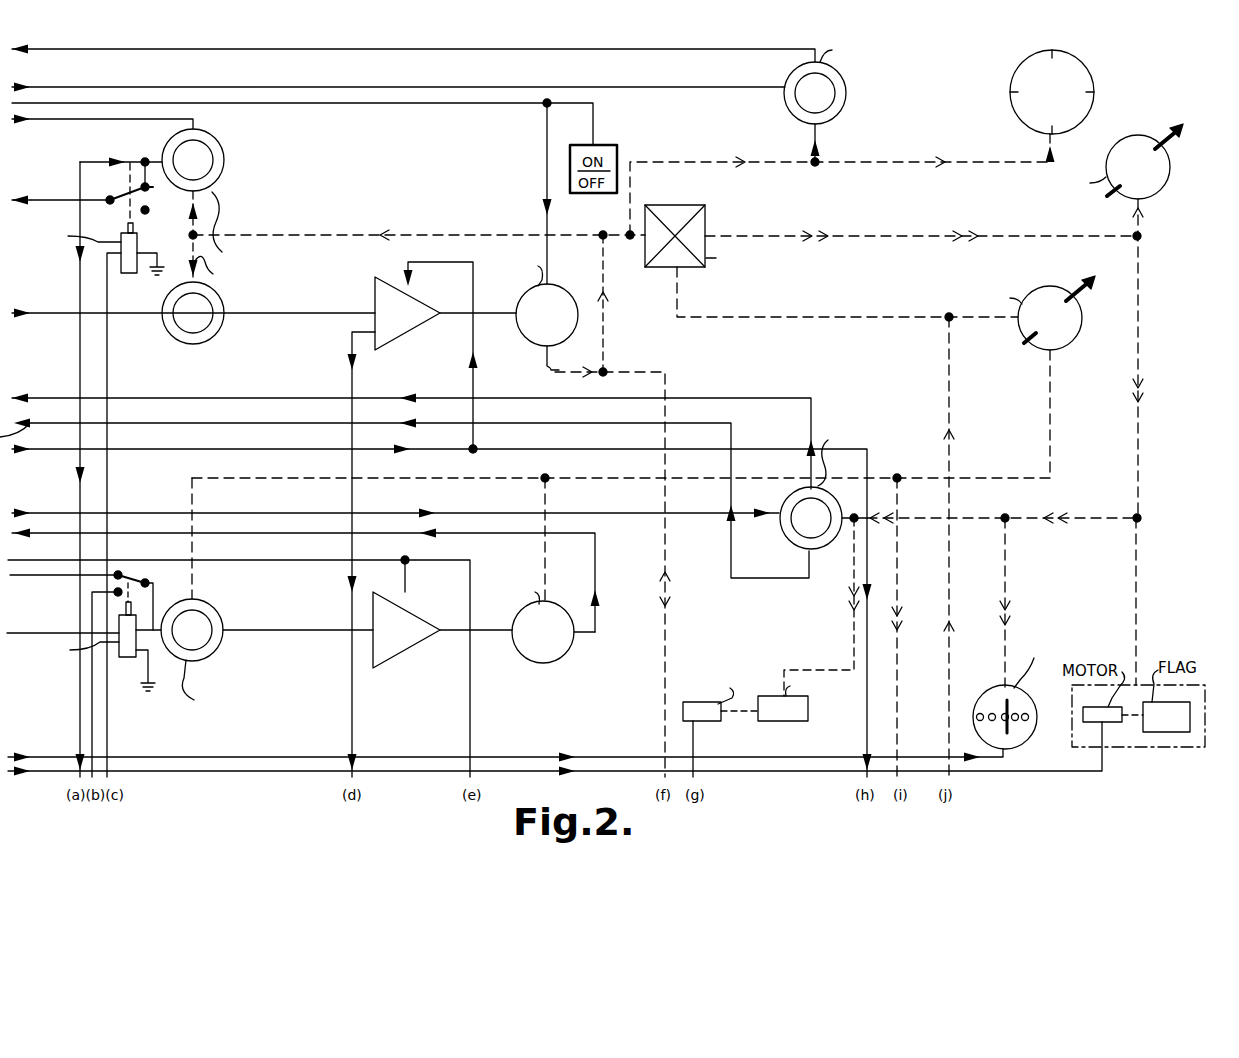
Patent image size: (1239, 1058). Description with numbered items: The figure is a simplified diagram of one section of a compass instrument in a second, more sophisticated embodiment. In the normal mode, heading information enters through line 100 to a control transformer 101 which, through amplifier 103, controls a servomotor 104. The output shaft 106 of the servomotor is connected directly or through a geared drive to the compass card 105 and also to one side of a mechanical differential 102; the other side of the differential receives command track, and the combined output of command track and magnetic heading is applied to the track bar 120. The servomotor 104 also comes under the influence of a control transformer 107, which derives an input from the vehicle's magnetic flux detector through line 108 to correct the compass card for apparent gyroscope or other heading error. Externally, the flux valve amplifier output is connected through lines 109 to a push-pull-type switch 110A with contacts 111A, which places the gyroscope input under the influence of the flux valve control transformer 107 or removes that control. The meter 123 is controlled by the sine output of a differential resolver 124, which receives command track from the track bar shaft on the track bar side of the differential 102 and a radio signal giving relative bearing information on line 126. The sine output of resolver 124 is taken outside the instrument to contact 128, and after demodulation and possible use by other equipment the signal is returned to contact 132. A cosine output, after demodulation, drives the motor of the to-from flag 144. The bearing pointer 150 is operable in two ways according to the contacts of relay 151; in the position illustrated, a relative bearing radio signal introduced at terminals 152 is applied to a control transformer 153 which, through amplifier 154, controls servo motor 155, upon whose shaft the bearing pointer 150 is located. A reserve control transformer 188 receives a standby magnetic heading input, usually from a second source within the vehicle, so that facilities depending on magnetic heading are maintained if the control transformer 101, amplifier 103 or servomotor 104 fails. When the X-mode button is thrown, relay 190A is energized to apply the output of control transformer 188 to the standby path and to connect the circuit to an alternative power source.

The line 100 is at (42, 312).
The control transformer 101 is at (212, 306).
The mechanical differential 102 is at (703, 208).
The amplifier 103 is at (380, 296).
The servomotor 104 is at (526, 296).
The compass card 105 is at (1016, 116).
The output shaft 106 is at (854, 161).
The control transformer 107 is at (837, 96).
The line 108 is at (98, 88).
The lines 109 is at (53, 198).
The push-pull-type switch 110A is at (129, 166).
The contacts 111A is at (146, 212).
The track bar 120 is at (1126, 136).
The meter 123 is at (992, 694).
The differential resolver 124 is at (790, 535).
The line 126 is at (142, 511).
The contact 128 is at (790, 578).
The contact 132 is at (42, 756).
The to-from flag 144 is at (796, 721).
The bearing pointer 150 is at (1074, 342).
The relay 151 is at (125, 657).
The terminals 152 is at (16, 576).
The control transformer 153 is at (209, 654).
The amplifier 154 is at (400, 646).
The servo motor 155 is at (542, 662).
The reserve control transformer 188 is at (204, 155).
The relay 190A is at (128, 273).